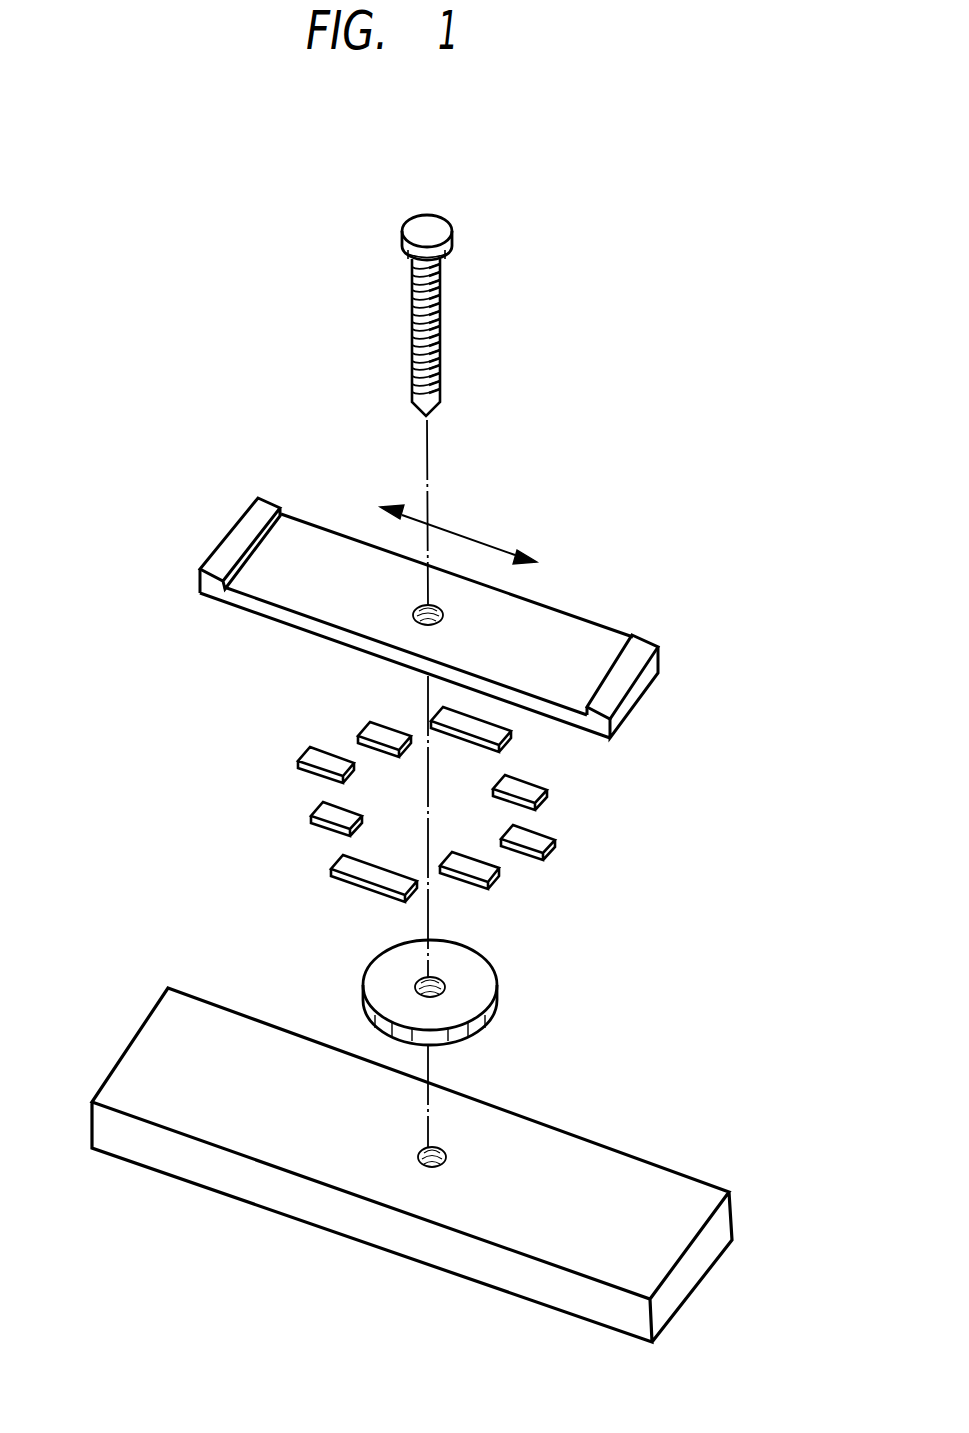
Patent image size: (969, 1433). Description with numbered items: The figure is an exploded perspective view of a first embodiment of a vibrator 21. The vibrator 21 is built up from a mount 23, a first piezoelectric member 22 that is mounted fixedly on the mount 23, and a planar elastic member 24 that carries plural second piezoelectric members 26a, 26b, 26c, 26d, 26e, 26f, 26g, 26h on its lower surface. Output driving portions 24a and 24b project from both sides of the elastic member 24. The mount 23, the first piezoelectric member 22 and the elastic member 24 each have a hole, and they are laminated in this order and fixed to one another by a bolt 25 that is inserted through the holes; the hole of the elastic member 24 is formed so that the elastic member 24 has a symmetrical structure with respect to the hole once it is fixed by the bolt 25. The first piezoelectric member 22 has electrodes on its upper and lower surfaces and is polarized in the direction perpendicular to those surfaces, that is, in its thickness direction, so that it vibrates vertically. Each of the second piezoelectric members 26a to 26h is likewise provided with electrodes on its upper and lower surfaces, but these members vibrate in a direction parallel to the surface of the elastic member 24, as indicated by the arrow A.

The vibrator 21 is at (151, 970).
The first piezoelectric member 22 is at (487, 982).
The mount 23 is at (677, 1179).
The planar elastic member 24 is at (577, 632).
The output driving portion 24a is at (642, 640).
The output driving portion 24b is at (262, 500).
The bolt 25 is at (437, 227).
The second piezoelectric member 26a is at (533, 842).
The second piezoelectric member 26b is at (520, 788).
The second piezoelectric member 26c is at (485, 727).
The second piezoelectric member 26d is at (387, 738).
The second piezoelectric member 26e is at (320, 763).
The second piezoelectric member 26f is at (332, 815).
The second piezoelectric member 26g is at (350, 868).
The second piezoelectric member 26h is at (485, 875).